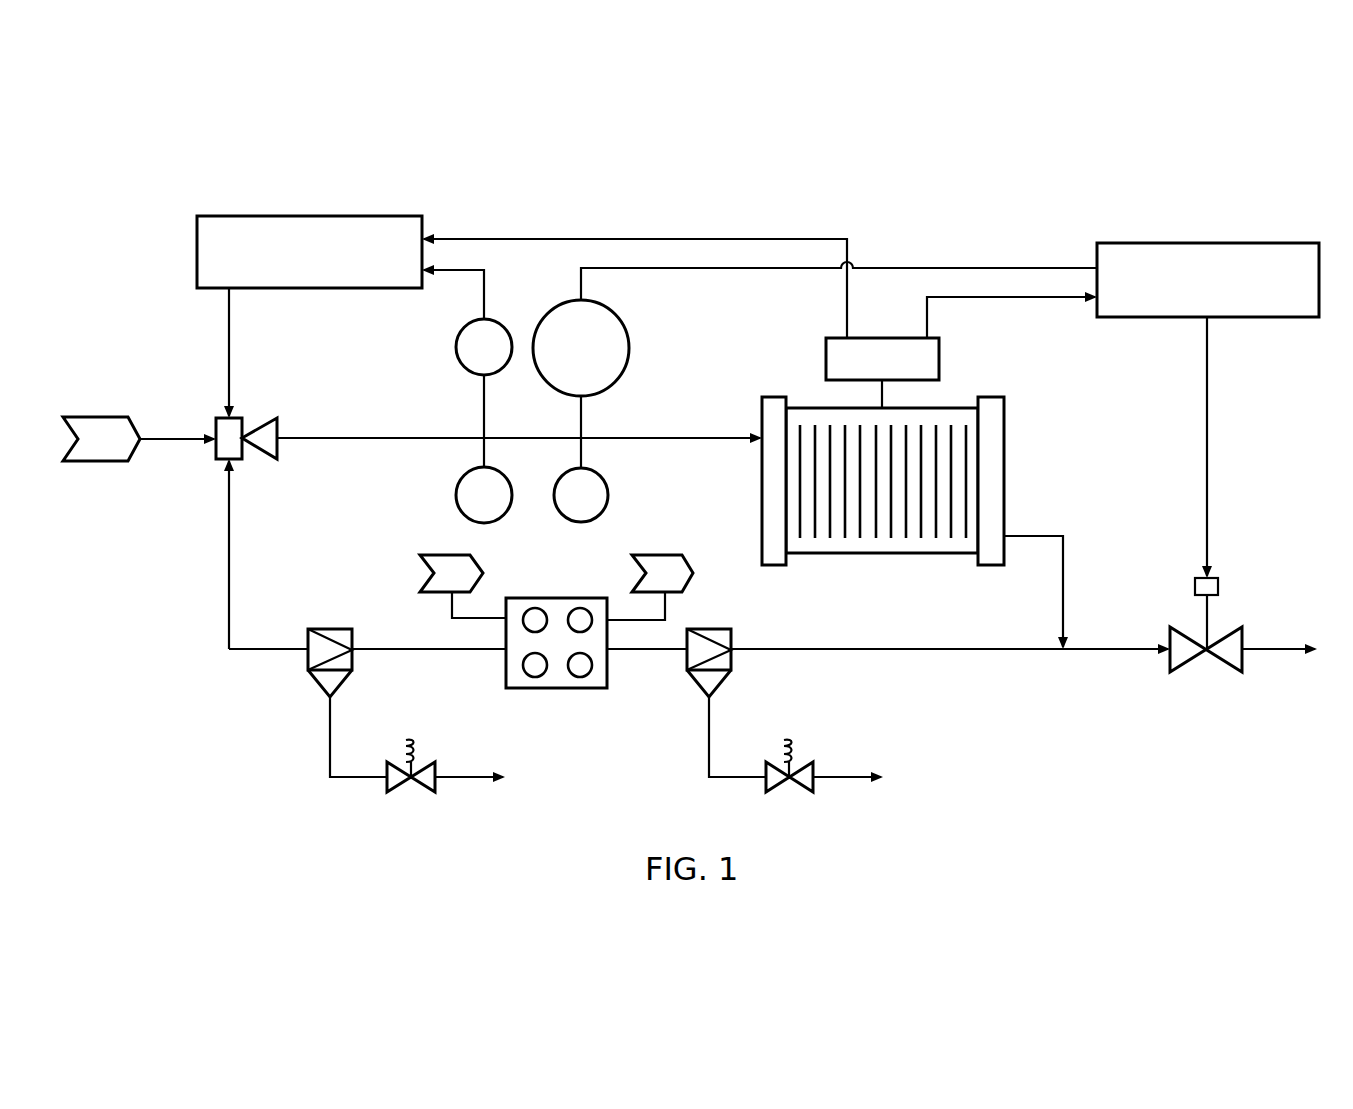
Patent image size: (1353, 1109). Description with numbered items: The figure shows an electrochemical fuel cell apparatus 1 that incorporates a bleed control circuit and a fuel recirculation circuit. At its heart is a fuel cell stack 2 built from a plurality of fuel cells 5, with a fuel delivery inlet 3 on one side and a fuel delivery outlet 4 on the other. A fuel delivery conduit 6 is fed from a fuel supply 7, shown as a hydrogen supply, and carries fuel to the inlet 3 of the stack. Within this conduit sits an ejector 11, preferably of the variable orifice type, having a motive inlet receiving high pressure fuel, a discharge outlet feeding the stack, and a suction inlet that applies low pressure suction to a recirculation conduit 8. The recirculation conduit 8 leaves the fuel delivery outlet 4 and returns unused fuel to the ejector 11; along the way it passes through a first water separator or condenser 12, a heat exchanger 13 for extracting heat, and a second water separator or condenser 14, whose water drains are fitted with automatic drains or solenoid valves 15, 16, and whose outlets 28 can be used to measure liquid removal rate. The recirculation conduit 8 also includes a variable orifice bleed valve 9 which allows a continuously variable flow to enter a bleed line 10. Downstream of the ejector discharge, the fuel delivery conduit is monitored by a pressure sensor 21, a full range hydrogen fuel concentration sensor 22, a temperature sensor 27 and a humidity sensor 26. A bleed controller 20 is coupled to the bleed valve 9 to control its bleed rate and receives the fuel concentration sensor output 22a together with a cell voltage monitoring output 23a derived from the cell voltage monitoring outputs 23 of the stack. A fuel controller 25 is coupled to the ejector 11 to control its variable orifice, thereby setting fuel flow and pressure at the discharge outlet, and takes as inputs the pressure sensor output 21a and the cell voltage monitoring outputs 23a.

The electrochemical fuel cell apparatus 1 is at (600, 210).
The fuel cell stack 2 is at (900, 499).
The fuel delivery inlet 3 is at (758, 436).
The fuel delivery outlet 4 is at (1004, 536).
The fuel cells 5 is at (845, 540).
The fuel delivery conduit 6 is at (690, 438).
The fuel supply 7 is at (98, 461).
The recirculation conduit 8 is at (960, 650).
The variable orifice bleed valve 9 is at (1228, 668).
The bleed line 10 is at (1272, 650).
The ejector 11 is at (215, 447).
The first water separator or condenser 12 is at (712, 629).
The heat exchanger 13 is at (558, 688).
The second water separator or condenser 14 is at (330, 629).
The automatic drain or solenoid valve 15 is at (778, 790).
The automatic drain or solenoid valve 16 is at (398, 790).
The bleed controller 20 is at (1208, 243).
The pressure sensor 21 is at (456, 347).
The pressure sensor output 21a is at (486, 290).
The fuel concentration sensor 22 is at (629, 348).
The fuel concentration sensor output 22a is at (1040, 268).
The cell voltage monitoring outputs 23 is at (870, 338).
The cell voltage monitoring output 23a is at (775, 239).
The fuel controller 25 is at (197, 250).
The humidity sensor 26 is at (608, 495).
The temperature sensor 27 is at (456, 495).
The outlets 28 is at (850, 777).